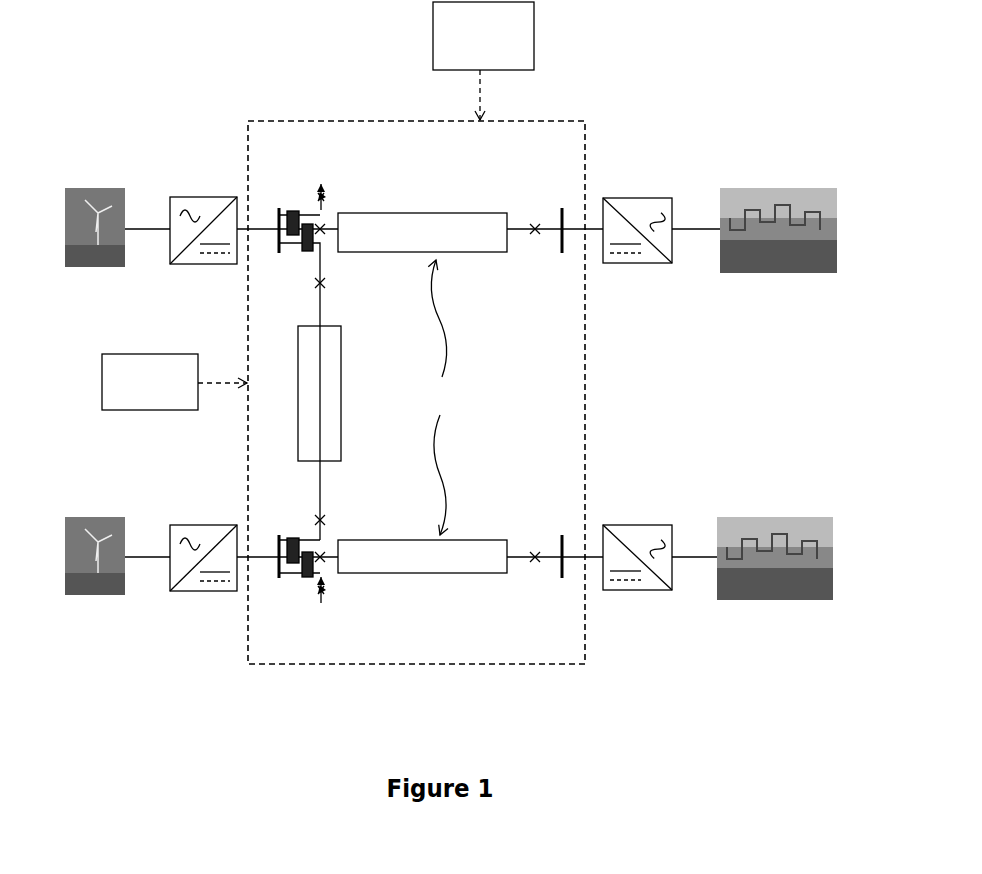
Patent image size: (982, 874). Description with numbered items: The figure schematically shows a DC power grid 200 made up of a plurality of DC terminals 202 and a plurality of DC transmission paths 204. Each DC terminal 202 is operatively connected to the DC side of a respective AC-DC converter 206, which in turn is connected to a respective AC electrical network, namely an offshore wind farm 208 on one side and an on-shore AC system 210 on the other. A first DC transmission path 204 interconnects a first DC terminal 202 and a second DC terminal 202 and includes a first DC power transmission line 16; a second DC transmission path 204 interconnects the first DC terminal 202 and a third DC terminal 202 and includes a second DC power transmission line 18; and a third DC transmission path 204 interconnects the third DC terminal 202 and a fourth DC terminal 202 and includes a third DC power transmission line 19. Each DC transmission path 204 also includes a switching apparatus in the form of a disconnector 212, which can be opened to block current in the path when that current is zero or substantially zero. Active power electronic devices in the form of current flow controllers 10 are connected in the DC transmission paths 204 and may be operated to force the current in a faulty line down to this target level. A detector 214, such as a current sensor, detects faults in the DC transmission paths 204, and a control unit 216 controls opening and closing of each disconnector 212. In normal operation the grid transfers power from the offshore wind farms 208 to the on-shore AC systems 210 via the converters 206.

The current flow controller 10 is at (292, 209).
The first DC power transmission line 16 is at (422, 232).
The second DC power transmission line 18 is at (319, 393).
The third DC power transmission line 19 is at (422, 557).
The DC power grid 200 is at (354, 115).
The DC terminal 202 is at (272, 243).
The DC transmission path 204 is at (332, 190).
The AC-DC converter 206 is at (208, 190).
The offshore wind farm 208 is at (88, 183).
The on-shore AC system 210 is at (780, 183).
The disconnector 212 is at (522, 393).
The detector 214 is at (174, 382).
The control unit 216 is at (483, 61).